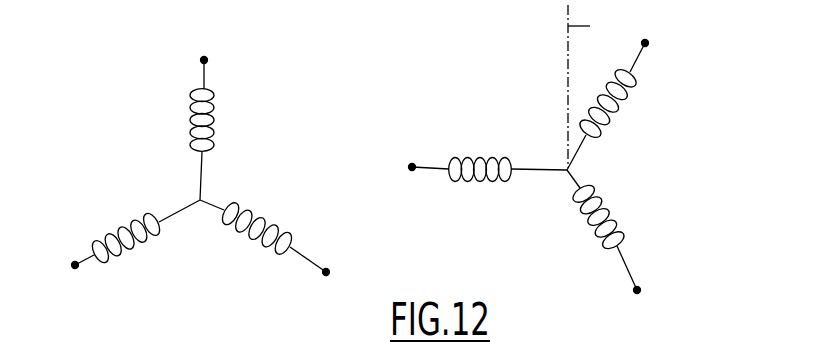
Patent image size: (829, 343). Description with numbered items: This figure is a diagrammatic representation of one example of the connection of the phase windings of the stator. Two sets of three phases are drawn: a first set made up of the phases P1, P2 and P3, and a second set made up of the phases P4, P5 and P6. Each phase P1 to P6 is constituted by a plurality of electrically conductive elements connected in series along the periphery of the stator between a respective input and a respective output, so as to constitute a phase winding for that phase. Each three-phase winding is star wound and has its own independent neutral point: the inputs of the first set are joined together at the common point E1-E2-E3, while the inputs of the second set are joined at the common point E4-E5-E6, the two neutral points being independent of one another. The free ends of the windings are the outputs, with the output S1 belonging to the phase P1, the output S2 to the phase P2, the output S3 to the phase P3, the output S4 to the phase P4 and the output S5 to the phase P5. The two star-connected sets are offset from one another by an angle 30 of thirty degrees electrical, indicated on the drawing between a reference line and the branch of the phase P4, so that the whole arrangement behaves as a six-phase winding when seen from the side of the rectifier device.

The phase P1 is at (222, 141).
The phase P2 is at (137, 212).
The phase P3 is at (282, 215).
The phase P4 is at (623, 121).
The phase P5 is at (508, 105).
The phase P6 is at (621, 210).
The output S1 is at (223, 67).
The output S2 is at (296, 276).
The output S3 is at (93, 282).
The output S4 is at (660, 60).
The output S5 is at (609, 280).
The inputs E1-E2-E3 is at (249, 187).
The inputs E4-E5-E6 is at (619, 163).
The electrical offset angle 30 is at (640, 41).